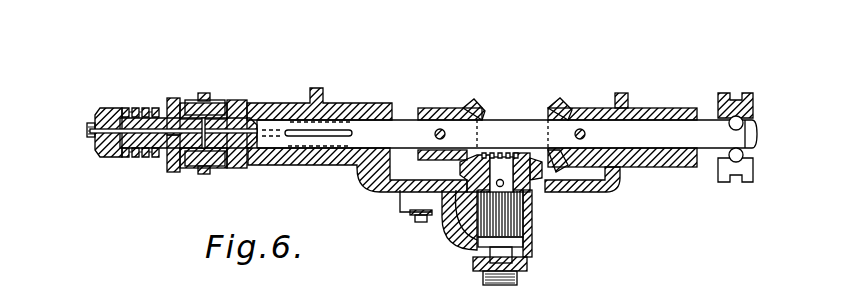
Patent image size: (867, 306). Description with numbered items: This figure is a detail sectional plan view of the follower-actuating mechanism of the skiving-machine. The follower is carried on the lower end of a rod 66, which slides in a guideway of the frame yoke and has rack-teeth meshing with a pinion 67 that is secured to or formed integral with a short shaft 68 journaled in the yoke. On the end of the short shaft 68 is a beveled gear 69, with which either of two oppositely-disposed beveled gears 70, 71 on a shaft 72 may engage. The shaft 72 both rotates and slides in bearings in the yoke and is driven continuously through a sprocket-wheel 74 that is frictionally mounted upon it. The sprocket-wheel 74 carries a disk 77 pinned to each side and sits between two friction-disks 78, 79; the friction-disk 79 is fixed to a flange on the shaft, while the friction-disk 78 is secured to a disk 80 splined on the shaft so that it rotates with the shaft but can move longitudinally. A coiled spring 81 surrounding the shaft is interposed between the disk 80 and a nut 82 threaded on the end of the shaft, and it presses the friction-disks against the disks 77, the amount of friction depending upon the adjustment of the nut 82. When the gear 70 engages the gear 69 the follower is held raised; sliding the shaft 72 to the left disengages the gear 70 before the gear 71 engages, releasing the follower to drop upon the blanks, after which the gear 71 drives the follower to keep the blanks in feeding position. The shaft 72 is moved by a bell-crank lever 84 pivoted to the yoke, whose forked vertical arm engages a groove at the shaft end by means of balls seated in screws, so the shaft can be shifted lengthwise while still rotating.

The rod 66 is at (462, 226).
The pinion 67 is at (515, 220).
The short shaft 68 is at (506, 250).
The beveled gear 69 is at (513, 162).
The beveled gear 70 is at (472, 108).
The beveled gear 71 is at (567, 112).
The shaft 72 is at (396, 130).
The sprocket-wheel 74 is at (208, 96).
The disk 77 is at (190, 101).
The friction-disk 78 is at (183, 100).
The friction-disk 79 is at (232, 108).
The disk 80 is at (172, 165).
The coiled spring 81 is at (133, 157).
The nut 82 is at (105, 110).
The bell-crank lever 84 is at (753, 104).